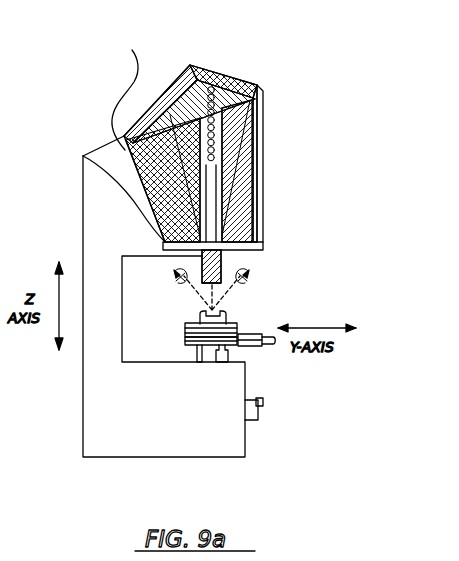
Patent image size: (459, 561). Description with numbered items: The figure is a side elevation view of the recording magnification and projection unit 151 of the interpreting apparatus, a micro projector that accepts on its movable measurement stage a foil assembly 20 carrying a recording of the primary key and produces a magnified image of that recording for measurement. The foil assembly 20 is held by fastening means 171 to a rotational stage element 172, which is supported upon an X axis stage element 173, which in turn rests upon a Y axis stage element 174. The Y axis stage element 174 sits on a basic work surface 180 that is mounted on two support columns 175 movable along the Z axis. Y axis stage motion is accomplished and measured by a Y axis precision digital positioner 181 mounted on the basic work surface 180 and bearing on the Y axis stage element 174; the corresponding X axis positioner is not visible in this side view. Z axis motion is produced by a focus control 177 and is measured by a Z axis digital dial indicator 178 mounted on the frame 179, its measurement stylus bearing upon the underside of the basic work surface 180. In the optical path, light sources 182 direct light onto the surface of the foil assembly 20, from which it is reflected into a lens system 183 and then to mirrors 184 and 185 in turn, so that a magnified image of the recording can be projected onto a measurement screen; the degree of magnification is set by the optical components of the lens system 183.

The foil assembly 20 is at (230, 306).
The hopper assembly 151 is at (280, 128).
The fastening means 171 is at (232, 315).
The rotational stage element 172 is at (194, 319).
The X axis stage element 173 is at (185, 330).
The Y axis stage element 174 is at (185, 340).
The support columns 175 is at (198, 362).
The focus control 177 is at (253, 425).
The Z axis digital dial indicator 178 is at (222, 363).
The frame 179 is at (228, 457).
The basic work surface 180 is at (230, 344).
The Y axis precision digital positioner 181 is at (83, 156).
The light sources 182 is at (248, 280).
The lens system 183 is at (235, 266).
The mirror 184 is at (233, 85).
The mirror 185 is at (118, 94).